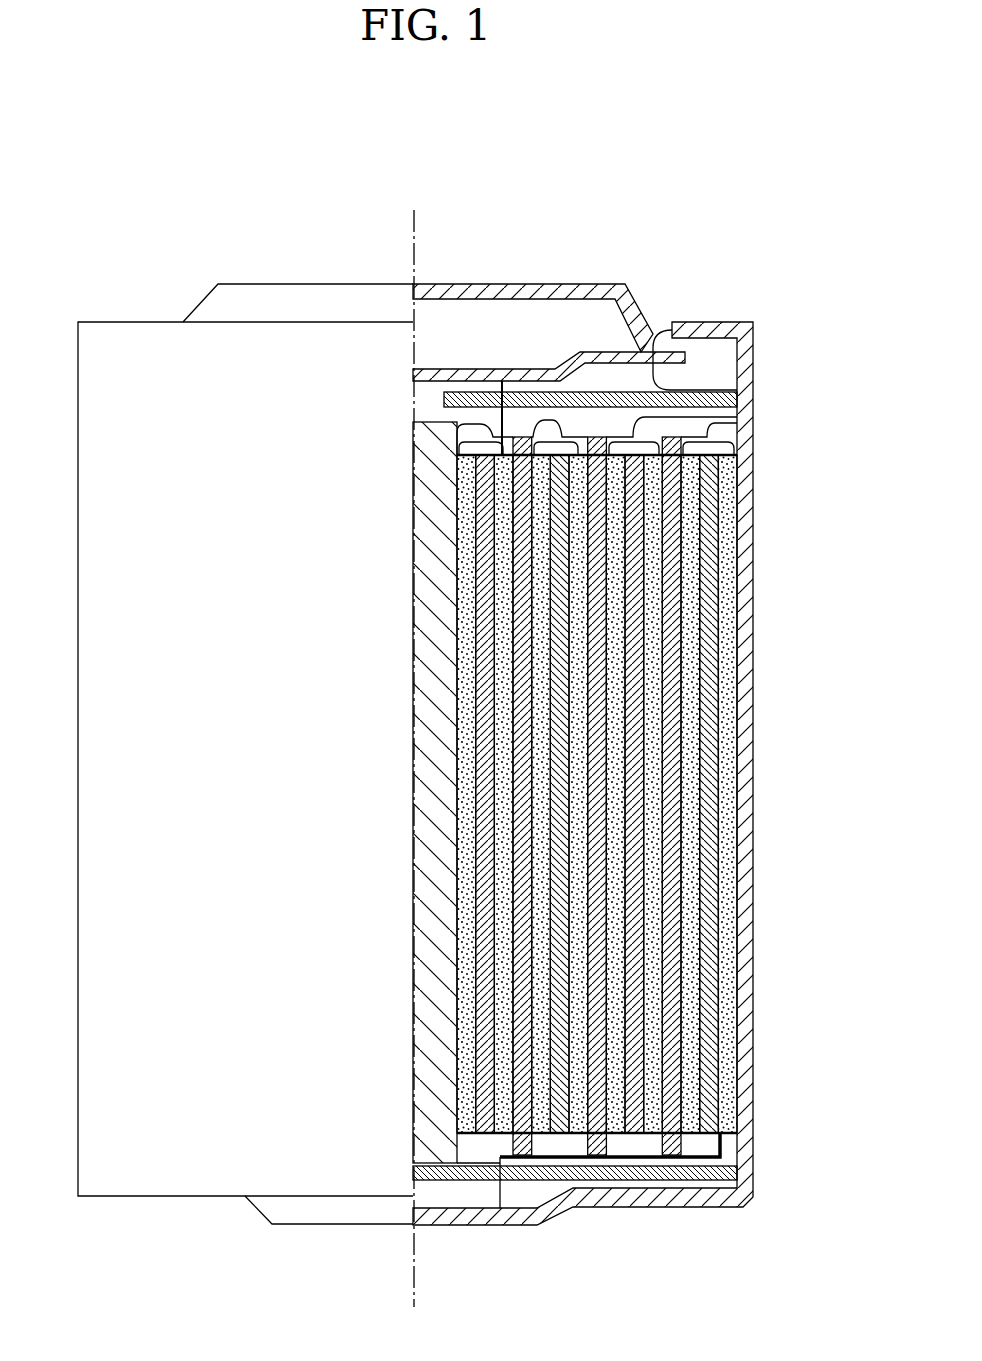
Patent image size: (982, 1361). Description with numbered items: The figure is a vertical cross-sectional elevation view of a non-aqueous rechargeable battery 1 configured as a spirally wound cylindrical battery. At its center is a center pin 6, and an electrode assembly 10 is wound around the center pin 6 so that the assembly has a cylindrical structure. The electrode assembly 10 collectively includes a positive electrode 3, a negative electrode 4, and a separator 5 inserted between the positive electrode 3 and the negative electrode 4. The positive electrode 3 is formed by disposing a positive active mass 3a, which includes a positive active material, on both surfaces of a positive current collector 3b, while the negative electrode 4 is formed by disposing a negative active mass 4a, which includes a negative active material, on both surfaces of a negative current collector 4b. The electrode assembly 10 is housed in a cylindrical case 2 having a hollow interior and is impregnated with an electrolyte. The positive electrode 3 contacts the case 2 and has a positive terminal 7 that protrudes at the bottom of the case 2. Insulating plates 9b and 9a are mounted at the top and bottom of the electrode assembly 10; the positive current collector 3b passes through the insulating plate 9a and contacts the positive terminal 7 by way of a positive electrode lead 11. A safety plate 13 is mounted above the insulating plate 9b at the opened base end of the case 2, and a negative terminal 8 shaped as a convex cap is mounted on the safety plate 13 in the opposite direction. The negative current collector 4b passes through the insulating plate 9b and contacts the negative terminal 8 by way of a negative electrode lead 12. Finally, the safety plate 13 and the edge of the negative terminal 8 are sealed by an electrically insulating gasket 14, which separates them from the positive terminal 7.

The non-aqueous rechargeable battery 1 is at (788, 194).
The case 2 is at (185, 1198).
The positive electrode 3 is at (495, 455).
The positive active mass 3a is at (728, 748).
The positive current collector 3b is at (706, 675).
The negative electrode 4 is at (485, 424).
The negative active mass 4a is at (467, 772).
The negative current collector 4b is at (485, 712).
The separator 5 is at (690, 512).
The center pin 6 is at (413, 1042).
The positive terminal 7 is at (462, 1217).
The negative terminal 8 is at (576, 310).
The insulating plate 9a is at (413, 1170).
The insulating plate 9b is at (444, 398).
The electrode assembly 10 is at (847, 377).
The positive electrode lead 11 is at (503, 1193).
The negative electrode lead 12 is at (500, 452).
The safety plate 13 is at (558, 352).
The gasket 14 is at (660, 330).